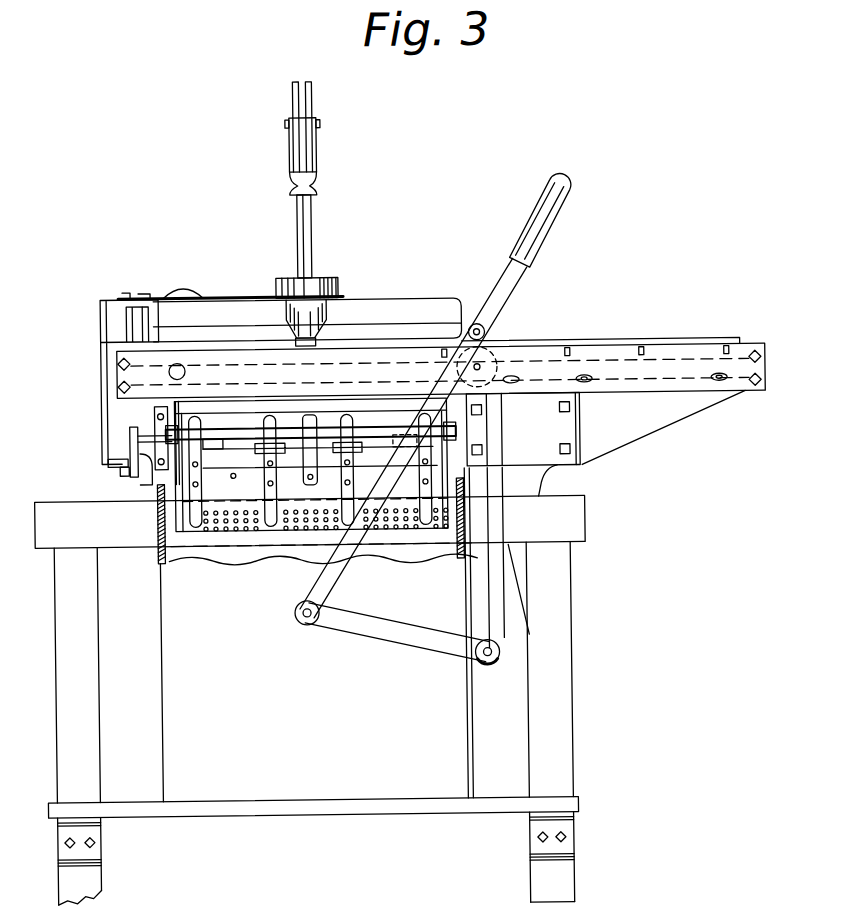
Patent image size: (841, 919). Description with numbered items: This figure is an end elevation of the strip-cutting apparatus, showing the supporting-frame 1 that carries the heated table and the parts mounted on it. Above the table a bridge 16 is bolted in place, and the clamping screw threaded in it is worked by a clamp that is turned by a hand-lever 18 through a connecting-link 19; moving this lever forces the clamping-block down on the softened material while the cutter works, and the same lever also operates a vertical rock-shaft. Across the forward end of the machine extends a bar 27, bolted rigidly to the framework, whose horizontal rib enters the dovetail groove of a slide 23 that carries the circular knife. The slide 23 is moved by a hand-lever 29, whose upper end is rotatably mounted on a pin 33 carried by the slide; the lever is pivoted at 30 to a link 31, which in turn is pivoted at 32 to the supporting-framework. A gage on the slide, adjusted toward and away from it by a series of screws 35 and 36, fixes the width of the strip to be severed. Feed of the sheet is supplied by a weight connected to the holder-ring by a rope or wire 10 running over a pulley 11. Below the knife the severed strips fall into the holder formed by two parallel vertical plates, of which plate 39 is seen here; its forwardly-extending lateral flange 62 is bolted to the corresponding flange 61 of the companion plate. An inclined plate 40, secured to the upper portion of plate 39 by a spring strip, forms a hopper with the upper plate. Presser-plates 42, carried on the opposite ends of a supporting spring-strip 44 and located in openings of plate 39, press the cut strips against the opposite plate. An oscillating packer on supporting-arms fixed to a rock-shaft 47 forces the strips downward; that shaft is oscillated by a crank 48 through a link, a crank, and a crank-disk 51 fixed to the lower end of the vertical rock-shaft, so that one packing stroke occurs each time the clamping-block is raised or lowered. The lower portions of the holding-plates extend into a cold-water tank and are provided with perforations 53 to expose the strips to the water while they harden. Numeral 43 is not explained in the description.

The supporting-frame 1 is at (586, 528).
The rope or wire 10 is at (320, 191).
The pulley 11 is at (316, 142).
The bridge 16 is at (394, 305).
The hand-lever 18 is at (198, 294).
The connecting-link 19 is at (330, 292).
The slide 23 is at (575, 349).
The bar 27 is at (630, 362).
The hand-lever 29 is at (493, 292).
The pivot 30 is at (305, 626).
The link 31 is at (382, 635).
The pivot 32 is at (488, 667).
The pin 33 is at (486, 334).
The screw 35 is at (585, 386).
The screw 36 is at (592, 384).
The vertical plate 39 is at (320, 473).
The inclined plate 40 is at (251, 428).
The presser-plate 42 is at (272, 522).
The post 43 is at (194, 530).
The supporting spring-strip 44 is at (250, 476).
The rock-shaft 47 is at (130, 438).
The crank 48 is at (112, 450).
The crank-disk 51 is at (108, 466).
The perforations 53 is at (392, 530).
The lateral flange 61 is at (470, 424).
The lateral flange 62 is at (443, 530).